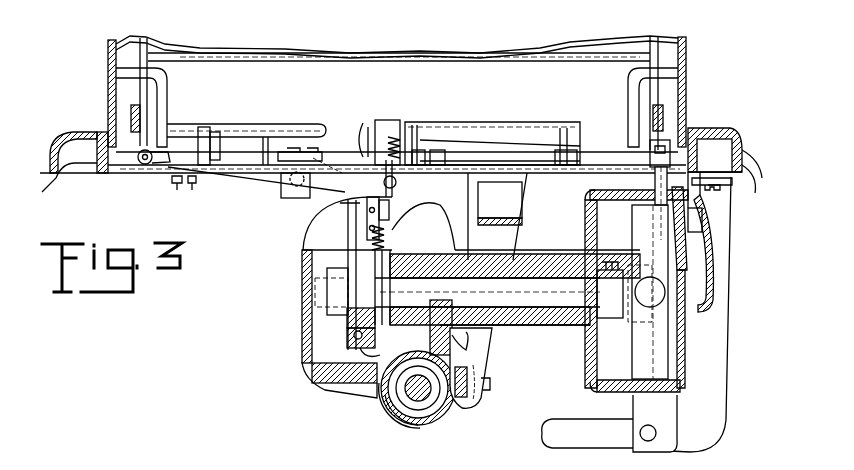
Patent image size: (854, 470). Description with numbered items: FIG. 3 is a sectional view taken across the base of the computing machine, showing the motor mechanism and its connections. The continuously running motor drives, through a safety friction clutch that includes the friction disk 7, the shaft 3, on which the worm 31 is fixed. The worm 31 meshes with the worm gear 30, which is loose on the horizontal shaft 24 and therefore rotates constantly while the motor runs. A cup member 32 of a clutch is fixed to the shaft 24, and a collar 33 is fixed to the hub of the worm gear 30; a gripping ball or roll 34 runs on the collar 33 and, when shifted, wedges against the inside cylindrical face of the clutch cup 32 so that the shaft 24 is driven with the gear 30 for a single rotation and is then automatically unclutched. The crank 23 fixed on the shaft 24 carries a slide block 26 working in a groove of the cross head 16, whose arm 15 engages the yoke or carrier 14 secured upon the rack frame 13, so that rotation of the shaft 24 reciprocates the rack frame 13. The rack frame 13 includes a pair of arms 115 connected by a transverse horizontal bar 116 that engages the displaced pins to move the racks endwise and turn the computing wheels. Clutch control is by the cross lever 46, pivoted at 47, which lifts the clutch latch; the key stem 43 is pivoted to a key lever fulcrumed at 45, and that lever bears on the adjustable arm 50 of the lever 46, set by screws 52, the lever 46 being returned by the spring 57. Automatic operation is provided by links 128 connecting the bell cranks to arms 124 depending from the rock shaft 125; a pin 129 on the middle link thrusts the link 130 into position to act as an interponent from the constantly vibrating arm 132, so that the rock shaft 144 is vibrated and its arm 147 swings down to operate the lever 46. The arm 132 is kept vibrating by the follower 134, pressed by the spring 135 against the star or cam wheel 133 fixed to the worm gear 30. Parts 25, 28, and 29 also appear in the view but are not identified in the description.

The shaft 3 is at (422, 400).
The friction disk 7 is at (599, 383).
The rack frame 13 is at (131, 110).
The yoke or carrier 14 is at (651, 152).
The arm 15 is at (655, 176).
The cross head 16 is at (632, 213).
The crank 23 is at (615, 313).
The horizontal shaft 24 is at (487, 292).
The arm 25 is at (562, 325).
The slide block 26 is at (631, 268).
The housing 28 is at (302, 283).
The bearing cap 29 is at (384, 406).
The worm gear 30 is at (436, 246).
The worm 31 is at (410, 395).
The cup member of clutch 32 is at (378, 352).
The collar 33 is at (347, 320).
The gripping ball or roll 34 is at (347, 342).
The stem 43 is at (160, 103).
The fulcrum 45 is at (120, 138).
The cross lever 46 is at (228, 178).
The pivot 47 is at (283, 188).
The adjustable end or arm 50 is at (138, 157).
The screws 52 is at (181, 191).
The returning spring 57 is at (312, 157).
The arms 115 is at (144, 53).
The transverse horizontal bar 116 is at (259, 57).
The arms 124 is at (415, 150).
The rock shaft 125 is at (522, 134).
The links 128 is at (416, 165).
The pin 129 is at (364, 135).
The link 130 is at (391, 177).
The arm 132 is at (370, 214).
The wheel 133 is at (386, 296).
The follower 134 is at (346, 291).
The spring 135 is at (386, 249).
The rock shaft 144 is at (325, 128).
The arm 147 is at (221, 124).